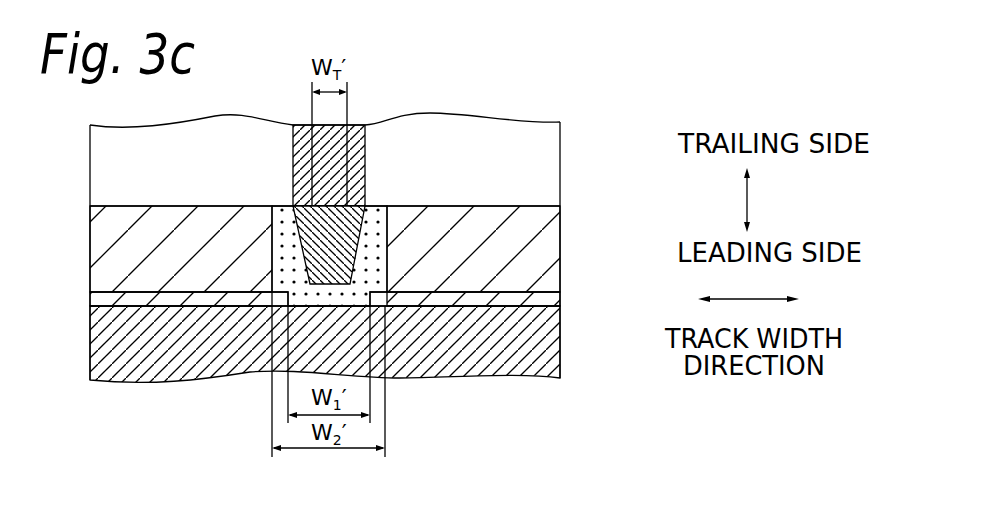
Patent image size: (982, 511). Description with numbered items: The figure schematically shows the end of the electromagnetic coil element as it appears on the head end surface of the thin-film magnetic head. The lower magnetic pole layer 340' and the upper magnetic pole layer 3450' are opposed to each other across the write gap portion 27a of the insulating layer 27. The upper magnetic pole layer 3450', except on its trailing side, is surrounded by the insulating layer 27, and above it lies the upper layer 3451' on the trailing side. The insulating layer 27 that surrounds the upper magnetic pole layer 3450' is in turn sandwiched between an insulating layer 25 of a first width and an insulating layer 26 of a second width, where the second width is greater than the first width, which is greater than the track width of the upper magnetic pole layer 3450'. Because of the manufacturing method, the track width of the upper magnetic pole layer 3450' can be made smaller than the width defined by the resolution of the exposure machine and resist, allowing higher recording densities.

The insulating layer 27 is at (287, 238).
The write gap portion 27a is at (332, 296).
The insulating layer 26 is at (117, 237).
The insulating layer 25 is at (120, 296).
The lower magnetic pole layer 340' is at (371, 346).
The upper magnetic pole layer 3450' is at (376, 246).
The trailing shield / upper magnetic layer 3451' is at (477, 165).